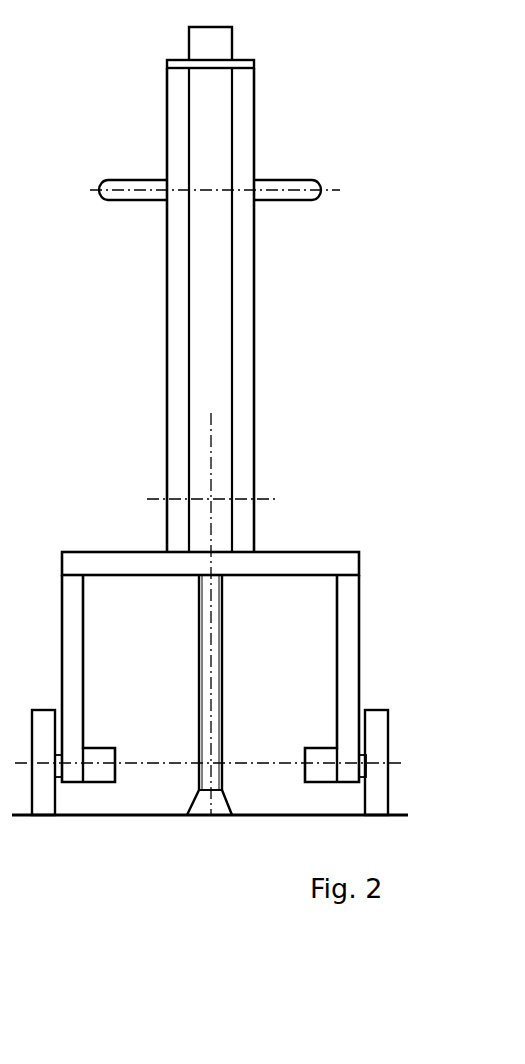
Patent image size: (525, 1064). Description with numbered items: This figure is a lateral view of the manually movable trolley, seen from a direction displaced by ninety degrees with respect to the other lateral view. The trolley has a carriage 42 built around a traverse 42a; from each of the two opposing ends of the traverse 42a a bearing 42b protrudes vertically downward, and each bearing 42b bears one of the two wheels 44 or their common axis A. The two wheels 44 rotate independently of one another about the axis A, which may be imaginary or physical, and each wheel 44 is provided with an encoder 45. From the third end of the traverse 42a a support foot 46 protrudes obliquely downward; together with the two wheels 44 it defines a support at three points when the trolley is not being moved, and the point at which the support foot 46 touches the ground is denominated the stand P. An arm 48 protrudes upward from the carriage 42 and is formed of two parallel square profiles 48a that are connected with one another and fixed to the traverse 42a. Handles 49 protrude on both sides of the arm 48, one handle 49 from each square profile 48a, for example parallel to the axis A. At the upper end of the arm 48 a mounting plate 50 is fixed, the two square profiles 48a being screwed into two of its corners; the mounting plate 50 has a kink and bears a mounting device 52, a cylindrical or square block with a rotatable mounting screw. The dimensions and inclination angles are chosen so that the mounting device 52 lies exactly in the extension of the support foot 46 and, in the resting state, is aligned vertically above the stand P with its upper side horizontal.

The carriage 42 is at (210, 624).
The traverse 42a is at (293, 562).
The bearing 42b is at (347, 593).
The wheels 44 is at (38, 720).
The encoder 45 is at (92, 752).
The support foot 46 is at (210, 667).
The arm 48 is at (280, 307).
The square profiles 48a is at (242, 115).
The handles 49 is at (135, 178).
The mounting plate 50 is at (177, 63).
The mounting device 52 is at (218, 42).
The axis A is at (125, 762).
The stand P is at (212, 815).